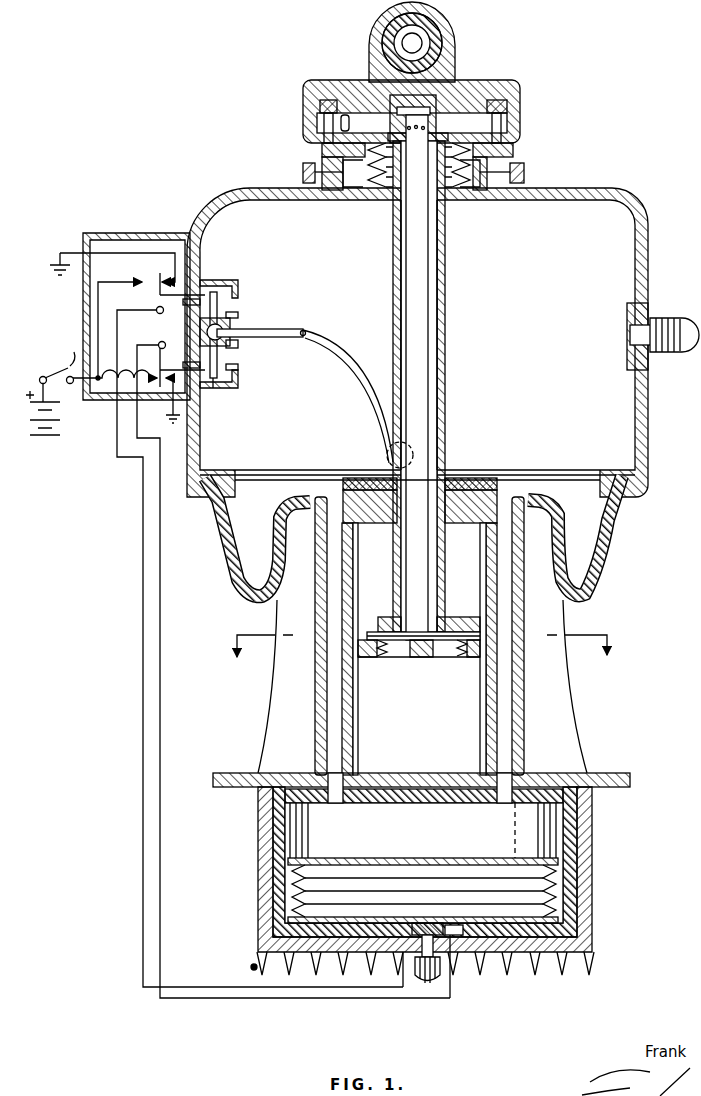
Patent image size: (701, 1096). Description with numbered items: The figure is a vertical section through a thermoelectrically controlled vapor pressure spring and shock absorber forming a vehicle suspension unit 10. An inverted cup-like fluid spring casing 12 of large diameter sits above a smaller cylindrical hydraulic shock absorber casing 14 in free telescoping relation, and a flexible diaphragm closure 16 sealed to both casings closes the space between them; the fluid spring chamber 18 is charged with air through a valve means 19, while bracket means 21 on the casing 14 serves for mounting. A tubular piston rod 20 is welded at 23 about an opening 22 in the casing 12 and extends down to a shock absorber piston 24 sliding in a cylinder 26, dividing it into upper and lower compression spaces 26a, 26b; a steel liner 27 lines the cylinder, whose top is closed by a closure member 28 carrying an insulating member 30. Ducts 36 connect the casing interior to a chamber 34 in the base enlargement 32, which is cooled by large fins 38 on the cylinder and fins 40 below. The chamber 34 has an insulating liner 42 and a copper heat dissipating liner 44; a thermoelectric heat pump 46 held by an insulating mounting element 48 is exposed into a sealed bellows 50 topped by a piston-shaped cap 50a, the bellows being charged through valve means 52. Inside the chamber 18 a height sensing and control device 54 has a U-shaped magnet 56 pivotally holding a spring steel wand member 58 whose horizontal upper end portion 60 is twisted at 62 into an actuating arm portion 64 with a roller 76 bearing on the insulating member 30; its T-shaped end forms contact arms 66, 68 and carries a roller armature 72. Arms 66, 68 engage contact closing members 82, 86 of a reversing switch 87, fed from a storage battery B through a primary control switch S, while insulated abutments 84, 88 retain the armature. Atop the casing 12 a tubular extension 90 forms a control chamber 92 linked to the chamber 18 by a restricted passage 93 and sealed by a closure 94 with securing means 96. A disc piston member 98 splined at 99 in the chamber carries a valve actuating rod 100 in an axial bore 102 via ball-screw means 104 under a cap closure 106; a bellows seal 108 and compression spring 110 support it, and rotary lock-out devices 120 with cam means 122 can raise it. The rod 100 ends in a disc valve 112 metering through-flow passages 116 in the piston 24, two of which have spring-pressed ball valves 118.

The vehicle suspension unit 10 is at (600, 196).
The fluid spring casing 12 is at (638, 228).
The hydraulic shock absorber casing 14 is at (315, 680).
The flexible diaphragm closure 16 is at (614, 530).
The fluid spring chamber 18 is at (553, 351).
The valve means 19 is at (668, 328).
The tubular piston rod 20 is at (440, 327).
The bracket means 21 is at (605, 778).
The opening 22 is at (391, 212).
The weld 23 is at (446, 205).
The shock absorber piston 24 is at (438, 657).
The cylinder 26 is at (474, 598).
The upper compression space 26a is at (394, 571).
The lower compression space 26b is at (408, 751).
The liner or sleeve 27 is at (495, 709).
The closure member 28 is at (478, 470).
The insulating member 30 is at (505, 470).
The enlargement 32 is at (590, 808).
The chamber 34 is at (430, 840).
The ducts 36 is at (337, 512).
The heat dissipating fins 38 is at (560, 682).
The fins 40 is at (563, 968).
The insulating liner 42 is at (592, 848).
The heat dissipating metallic liner 44 is at (588, 898).
The thermoelectric heat pump 46 is at (555, 775).
The insulating mounting element 48 is at (448, 940).
The sealed bellows 50 is at (470, 880).
The piston-shaped cap 50a is at (392, 862).
The valve means 52 is at (437, 985).
The height sensing and static fluid pressure control device 54 is at (240, 278).
The U-shaped permanent magnet 56 is at (240, 318).
The sensing and static position controlling arm or wand member 58 is at (246, 327).
The upper end portion 60 is at (265, 331).
The twist 62 is at (304, 334).
The actuating arm portion 64 is at (366, 370).
The upper electrical contact arm 66 is at (216, 296).
The lower electrical contact arm 68 is at (224, 387).
The roller armature 72 is at (238, 346).
The roller 76 is at (392, 455).
The contact closing member 82 is at (190, 312).
The insulated abutment 84 is at (228, 320).
The contact closing member 86 is at (216, 388).
The reversing switch 87 is at (83, 316).
The insulated abutment 88 is at (240, 372).
The tubular extension 90 is at (507, 128).
The valve control chamber 92 is at (458, 122).
The restricted flow passage 93 is at (462, 202).
The closure 94 is at (512, 88).
The securing means 96 is at (438, 20).
The valve controlling disc piston member 98 is at (345, 118).
The spline 99 is at (322, 112).
The valve actuating rod 100 is at (418, 293).
The axial bore 102 is at (440, 100).
The ball-screw means 104 is at (398, 108).
The cap closure 106 is at (452, 70).
The flexible bellows seal 108 is at (468, 150).
The compression spring 110 is at (372, 157).
The disc valve 112 is at (396, 646).
The through-flow passages 116 is at (486, 640).
The spring-pressed ball valves 118 is at (462, 656).
The rotary lock-out devices 120 is at (305, 172).
The cam means 122 is at (522, 202).
The primary control switch S is at (57, 365).
The storage battery B is at (55, 435).